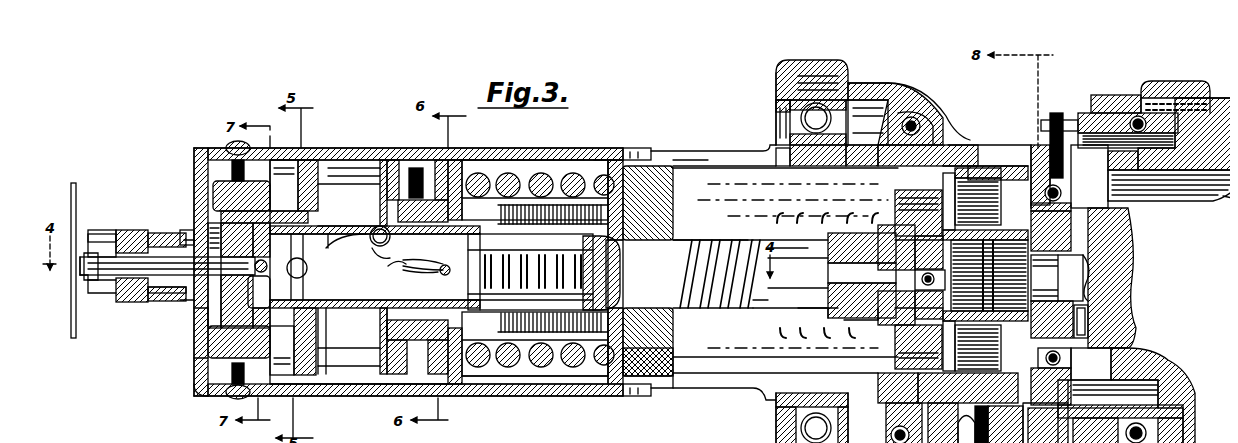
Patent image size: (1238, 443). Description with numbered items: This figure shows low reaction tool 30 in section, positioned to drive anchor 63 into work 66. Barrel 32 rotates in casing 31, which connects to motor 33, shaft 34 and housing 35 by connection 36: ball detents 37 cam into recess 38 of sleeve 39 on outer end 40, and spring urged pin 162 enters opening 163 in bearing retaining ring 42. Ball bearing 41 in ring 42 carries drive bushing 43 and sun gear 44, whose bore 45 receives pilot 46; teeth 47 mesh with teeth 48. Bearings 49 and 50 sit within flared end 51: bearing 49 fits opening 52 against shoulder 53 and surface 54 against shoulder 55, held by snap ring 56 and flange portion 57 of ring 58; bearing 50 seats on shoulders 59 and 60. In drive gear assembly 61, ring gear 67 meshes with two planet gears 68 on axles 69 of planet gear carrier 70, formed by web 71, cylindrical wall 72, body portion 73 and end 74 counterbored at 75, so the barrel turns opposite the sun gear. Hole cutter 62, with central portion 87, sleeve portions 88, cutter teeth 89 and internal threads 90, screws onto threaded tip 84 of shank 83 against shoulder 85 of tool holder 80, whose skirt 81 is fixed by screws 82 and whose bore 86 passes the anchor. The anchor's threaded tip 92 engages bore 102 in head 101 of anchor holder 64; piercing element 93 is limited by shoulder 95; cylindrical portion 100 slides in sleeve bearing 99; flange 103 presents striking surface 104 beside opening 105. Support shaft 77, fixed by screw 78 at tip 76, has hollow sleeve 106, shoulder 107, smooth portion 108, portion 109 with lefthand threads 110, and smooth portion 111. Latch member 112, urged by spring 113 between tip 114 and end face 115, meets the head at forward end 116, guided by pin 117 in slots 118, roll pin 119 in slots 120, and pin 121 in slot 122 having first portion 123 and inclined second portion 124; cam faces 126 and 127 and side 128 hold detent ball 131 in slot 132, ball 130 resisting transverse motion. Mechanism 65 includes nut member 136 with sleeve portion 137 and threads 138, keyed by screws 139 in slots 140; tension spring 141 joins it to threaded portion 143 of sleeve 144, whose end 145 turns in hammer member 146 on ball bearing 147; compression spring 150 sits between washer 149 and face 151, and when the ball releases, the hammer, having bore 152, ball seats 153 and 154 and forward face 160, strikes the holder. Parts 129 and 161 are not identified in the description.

The tool 30 is at (737, 136).
The casing 31 is at (900, 74).
The barrel 32 is at (598, 150).
The motor 33 is at (1213, 96).
The shaft 34 is at (1112, 262).
The motor housing 35 is at (1222, 188).
The connection 36 is at (1086, 106).
The ball detents 37 is at (1150, 90).
The annular recess 38 is at (1104, 176).
The sleeve 39 is at (1184, 134).
The outer end 40 is at (1148, 176).
The ball bearing 41 is at (1092, 355).
The bearing retaining ring 42 is at (1060, 347).
The drive bushing 43 is at (1080, 302).
The sun gear 44 is at (1001, 269).
The bore 45 is at (1057, 278).
The pilot 46 is at (1096, 267).
The teeth 47 is at (1064, 191).
The teeth 48 is at (1071, 229).
The bearing 49 is at (838, 110).
The bearing 50 is at (938, 112).
The flared end 51 is at (812, 91).
The cylindrical opening 52 is at (769, 88).
The annular shoulder 53 is at (844, 88).
The cylindrical surface 54 is at (813, 152).
The transverse shoulder 55 is at (844, 154).
The snap ring 56 is at (780, 152).
The flange portion 57 is at (773, 102).
The ring 58 is at (806, 52).
The annular shoulder 59 is at (926, 88).
The shoulder 60 is at (928, 155).
The drive gear assembly 61 is at (1011, 138).
The hole cutter 62 is at (104, 221).
The anchor 63 is at (179, 228).
The anchor holder 64 is at (316, 154).
The mechanism 65 is at (668, 200).
The work 66 is at (65, 200).
The ring gear 67 is at (935, 380).
The planet gears 68 is at (1052, 319).
The axles 69 is at (898, 388).
The planet gear carrier 70 is at (893, 197).
The web 71 is at (1051, 386).
The cylindrical wall 72 is at (918, 213).
The body portion 73 is at (874, 312).
The cylindrical end 74 is at (836, 312).
The counterbore 75 is at (918, 343).
The tip 76 is at (871, 271).
The support shaft 77 is at (793, 304).
The screw 78 is at (814, 302).
The tool holder 80 is at (197, 325).
The skirt 81 is at (190, 366).
The screws 82 is at (222, 377).
The shank 83 is at (149, 293).
The threaded tip 84 is at (130, 294).
The annular shoulder 85 is at (132, 292).
The bore 86 is at (176, 232).
The central portion 87 is at (120, 222).
The sleeve portion 88 is at (153, 224).
The cutter teeth 89 is at (86, 273).
The internal threads 90 is at (108, 231).
The threaded tip 92 is at (210, 278).
The piercing element 93 is at (75, 267).
The annular shoulder 95 is at (80, 252).
The sleeve bearing 99 is at (190, 351).
The cylindrical portion 100 is at (239, 342).
The head 101 is at (200, 320).
The bore 102 is at (220, 258).
The flange 103 is at (297, 380).
The striking surface 104 is at (372, 350).
The cylindrical opening 105 is at (348, 191).
The hollow sleeve 106 is at (327, 341).
The shoulder 107 is at (647, 346).
The smooth portion 108 is at (659, 296).
The threaded portion 109 is at (702, 304).
The lefthand threads 110 is at (734, 304).
The smooth portion 111 is at (750, 300).
The latch member 112 is at (530, 272).
The compression spring 113 is at (534, 268).
The spring retaining tip 114 is at (474, 268).
The end face 115 is at (612, 265).
The forward end 116 is at (241, 196).
The pin 117 is at (258, 292).
The slots 118 is at (283, 185).
The roll pin 119 is at (335, 340).
The slots 120 is at (305, 261).
The pin 121 is at (419, 272).
The slot 122 is at (431, 262).
The first portion 123 is at (391, 255).
The second portion 124 is at (389, 272).
The cam face 126 is at (347, 243).
The cam face 127 is at (369, 260).
The side 128 is at (362, 226).
The sleeve 129 is at (279, 350).
The ball 130 is at (300, 331).
The detent ball 131 is at (374, 218).
The slot 132 is at (416, 191).
The nut member 136 is at (610, 152).
The sleeve portion 137 is at (596, 378).
The internal threads 138 is at (663, 271).
The screws 139 is at (629, 272).
The slots 140 is at (733, 382).
The tension spring 141 is at (547, 376).
The threaded portion 143 is at (473, 370).
The sleeve 144 is at (450, 164).
The cylindrical end 145 is at (430, 357).
The hammer member 146 is at (386, 378).
The ball bearing 147 is at (408, 160).
The washer 149 is at (442, 386).
The compression spring 150 is at (567, 165).
The face 151 is at (618, 388).
The bore 152 is at (416, 347).
The ball seat 153 is at (372, 301).
The ball seat 154 is at (420, 262).
The forward annular face 160 is at (375, 164).
The spring 161 is at (778, 206).
The spring urged pin 162 is at (1105, 362).
The opening 163 is at (1024, 410).